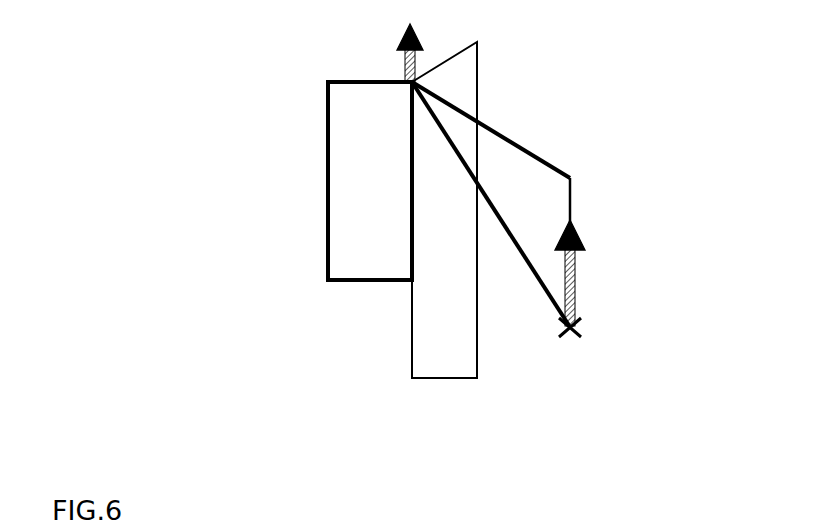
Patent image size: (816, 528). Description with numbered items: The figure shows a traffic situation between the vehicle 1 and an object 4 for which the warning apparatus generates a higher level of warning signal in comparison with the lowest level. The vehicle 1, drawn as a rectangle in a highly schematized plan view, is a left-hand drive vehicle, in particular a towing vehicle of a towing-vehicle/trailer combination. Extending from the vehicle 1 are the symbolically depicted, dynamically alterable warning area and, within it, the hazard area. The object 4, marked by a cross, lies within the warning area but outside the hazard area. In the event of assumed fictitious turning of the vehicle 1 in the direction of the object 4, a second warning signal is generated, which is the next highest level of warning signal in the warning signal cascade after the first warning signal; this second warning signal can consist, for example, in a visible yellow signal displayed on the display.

The vehicle 1 is at (335, 197).
The object 4 is at (583, 327).